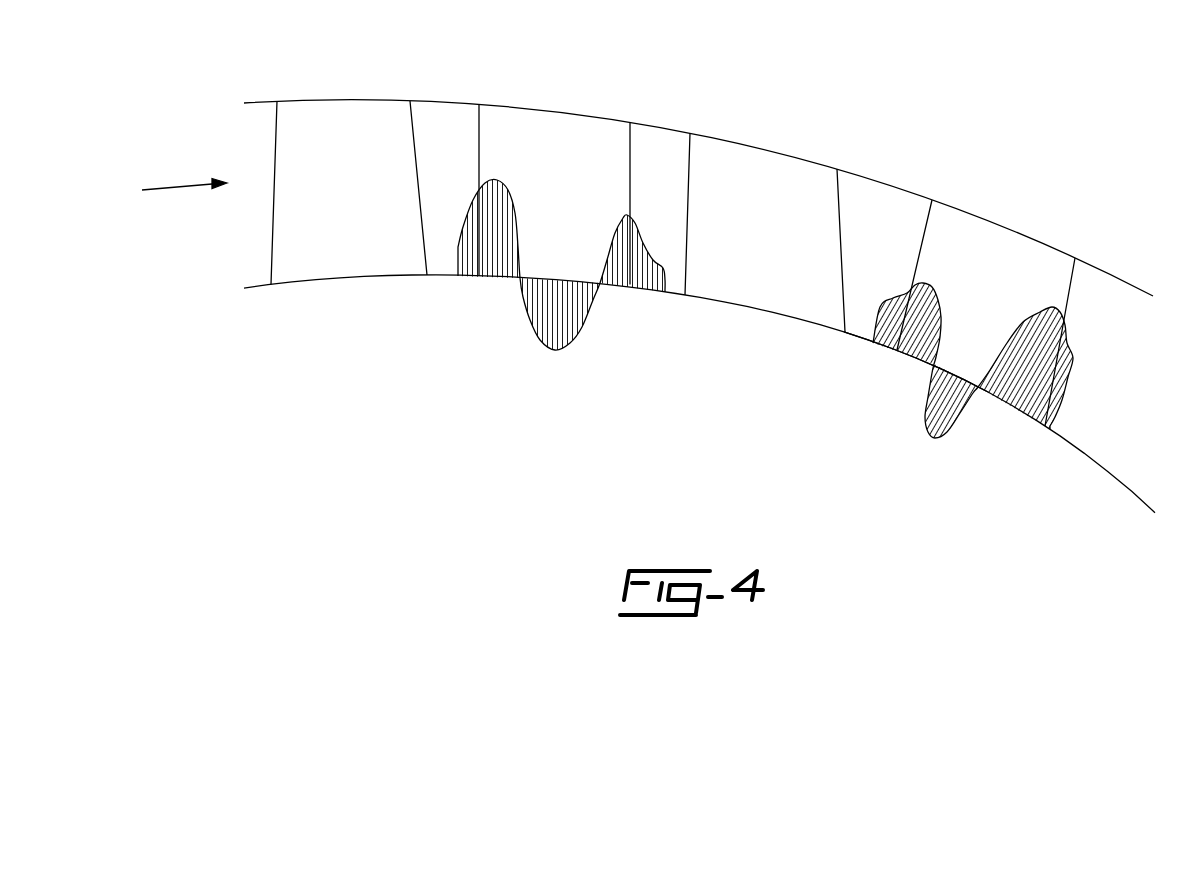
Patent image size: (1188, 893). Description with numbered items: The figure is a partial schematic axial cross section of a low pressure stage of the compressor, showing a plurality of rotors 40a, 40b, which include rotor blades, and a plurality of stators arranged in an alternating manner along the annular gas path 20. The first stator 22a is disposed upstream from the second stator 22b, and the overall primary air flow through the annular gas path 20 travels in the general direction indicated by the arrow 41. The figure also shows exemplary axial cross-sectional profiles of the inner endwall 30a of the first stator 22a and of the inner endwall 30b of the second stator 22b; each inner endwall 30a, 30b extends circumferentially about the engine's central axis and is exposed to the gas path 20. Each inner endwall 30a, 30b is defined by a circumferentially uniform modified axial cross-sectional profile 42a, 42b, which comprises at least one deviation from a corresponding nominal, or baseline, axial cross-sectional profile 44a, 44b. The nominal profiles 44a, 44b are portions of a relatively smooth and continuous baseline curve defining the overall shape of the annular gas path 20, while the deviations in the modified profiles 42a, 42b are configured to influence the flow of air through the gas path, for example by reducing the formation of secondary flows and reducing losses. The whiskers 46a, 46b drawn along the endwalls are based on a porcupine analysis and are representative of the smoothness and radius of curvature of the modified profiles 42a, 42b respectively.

The annular gas path 20 is at (1138, 378).
The first stator 22a is at (577, 82).
The second stator 22b is at (1033, 198).
The inner endwall 30a is at (497, 277).
The inner endwall 30b is at (890, 352).
The rotor 40a is at (377, 80).
The rotor 40b is at (790, 117).
The arrow 41 is at (173, 190).
The modified axial cross-sectional profile 42a is at (572, 303).
The modified axial cross-sectional profile 42b is at (968, 410).
The nominal axial cross-sectional profile 44a is at (562, 257).
The nominal axial cross-sectional profile 44b is at (970, 360).
The whiskers 46a is at (530, 322).
The whiskers 46b is at (923, 440).